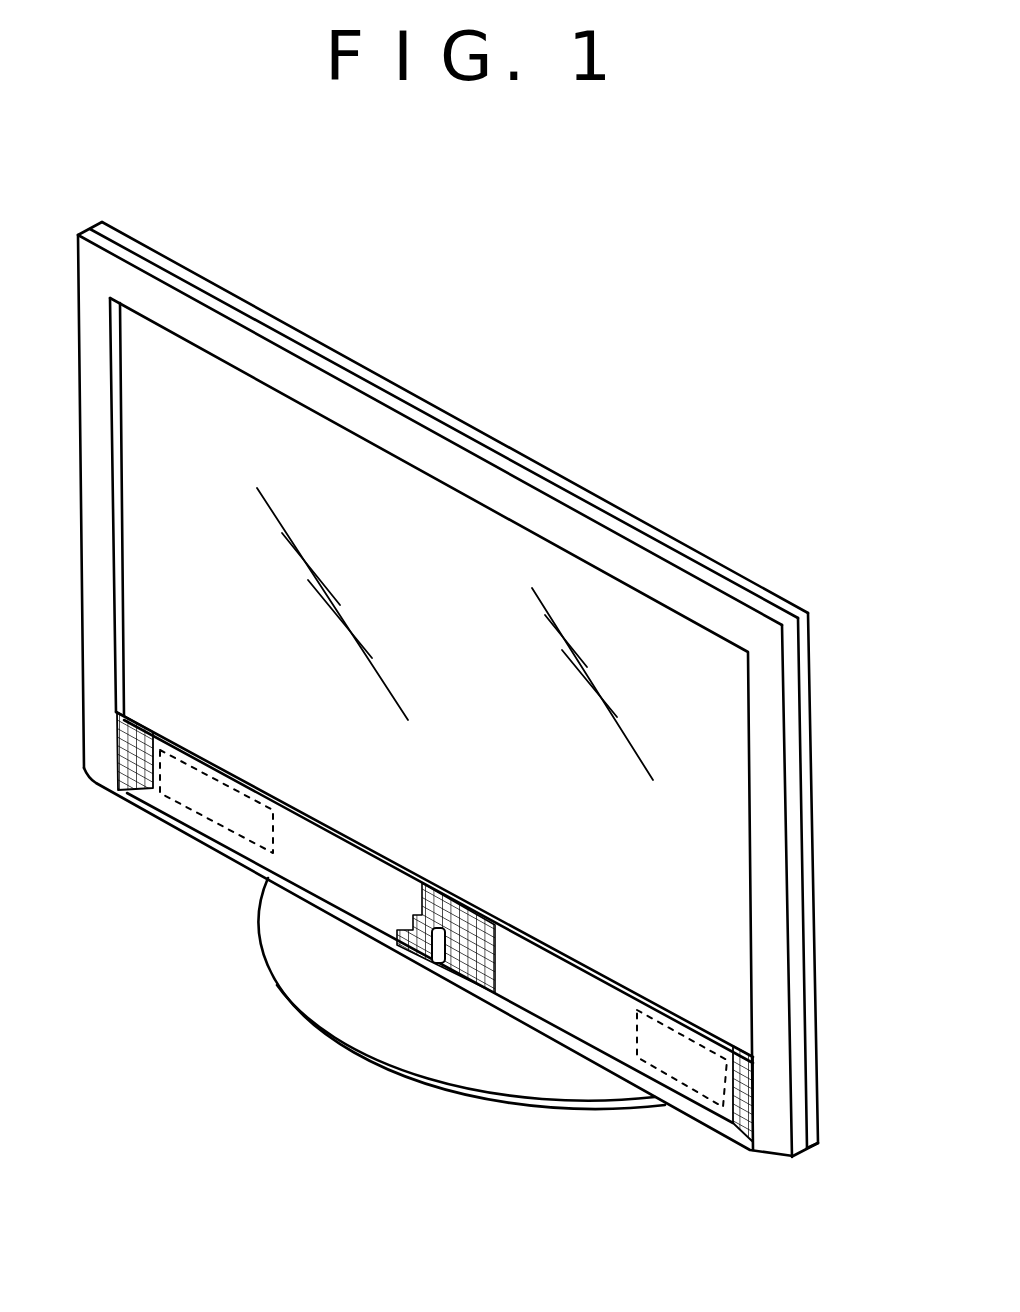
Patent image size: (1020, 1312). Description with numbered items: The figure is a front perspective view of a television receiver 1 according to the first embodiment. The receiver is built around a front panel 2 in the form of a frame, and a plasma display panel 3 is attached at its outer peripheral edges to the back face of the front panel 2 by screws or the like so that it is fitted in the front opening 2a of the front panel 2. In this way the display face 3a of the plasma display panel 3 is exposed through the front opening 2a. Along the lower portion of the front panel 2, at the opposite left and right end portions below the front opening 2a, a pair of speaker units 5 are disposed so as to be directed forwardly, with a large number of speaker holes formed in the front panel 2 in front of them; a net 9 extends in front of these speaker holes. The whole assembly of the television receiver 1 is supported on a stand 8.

The television receiver 1 is at (468, 357).
The front panel 2 is at (768, 873).
The front opening 2a is at (752, 751).
The plasma display panel 3 is at (477, 543).
The display face 3a is at (617, 633).
The speaker unit 5 is at (210, 818).
The stand 8 is at (397, 1048).
The net 9 is at (587, 1032).